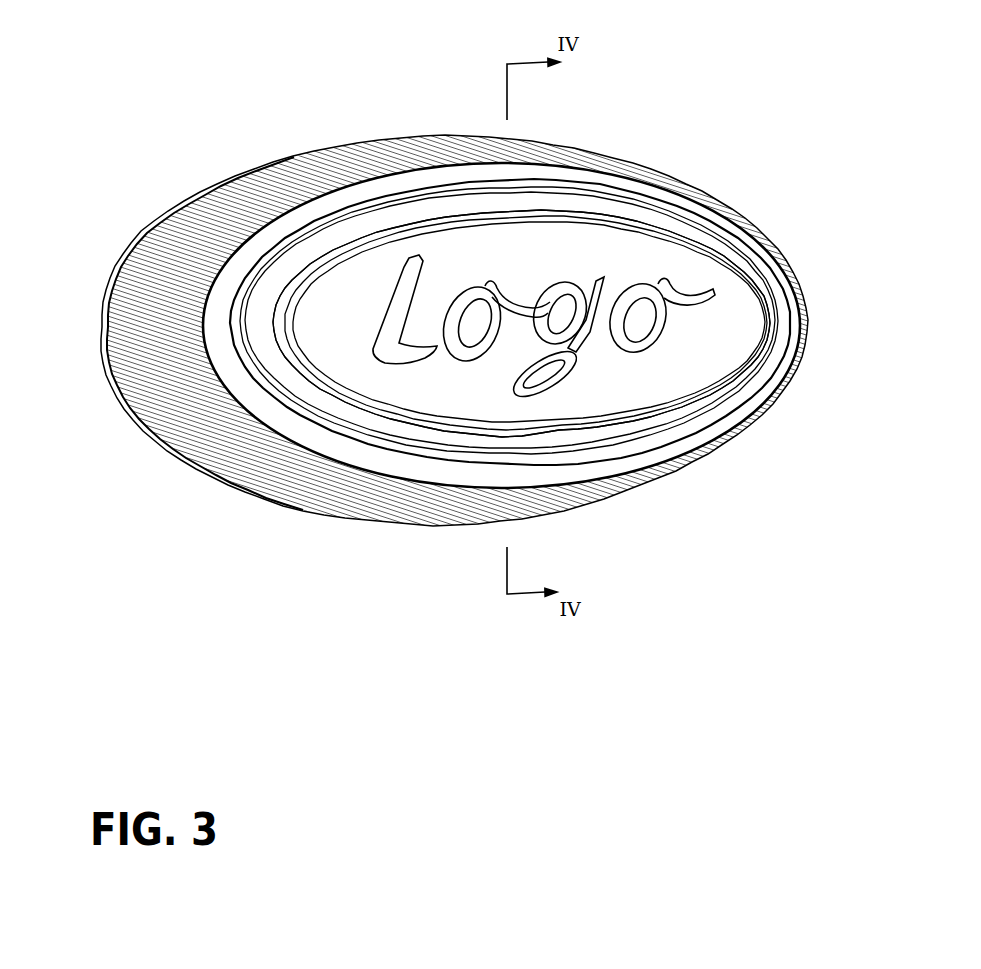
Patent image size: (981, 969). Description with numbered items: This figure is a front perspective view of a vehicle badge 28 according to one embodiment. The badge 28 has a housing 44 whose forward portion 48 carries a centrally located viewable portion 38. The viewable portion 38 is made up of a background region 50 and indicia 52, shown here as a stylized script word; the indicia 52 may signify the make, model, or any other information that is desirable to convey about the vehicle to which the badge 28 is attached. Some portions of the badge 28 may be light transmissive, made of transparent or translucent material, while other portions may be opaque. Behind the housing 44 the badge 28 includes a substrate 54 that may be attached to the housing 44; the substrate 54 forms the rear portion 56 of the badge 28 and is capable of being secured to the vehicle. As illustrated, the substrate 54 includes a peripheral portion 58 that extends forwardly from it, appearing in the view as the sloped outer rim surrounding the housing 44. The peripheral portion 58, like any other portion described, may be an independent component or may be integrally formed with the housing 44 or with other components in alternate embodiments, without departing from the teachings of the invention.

The badge 28 is at (195, 187).
The viewable portion 38 is at (342, 301).
The housing 44 is at (691, 372).
The forward portion 48 is at (353, 334).
The background region 50 is at (643, 243).
The indicia 52 is at (562, 279).
The substrate 54 is at (110, 284).
The rear portion 56 is at (122, 408).
The peripheral portion 58 is at (218, 418).